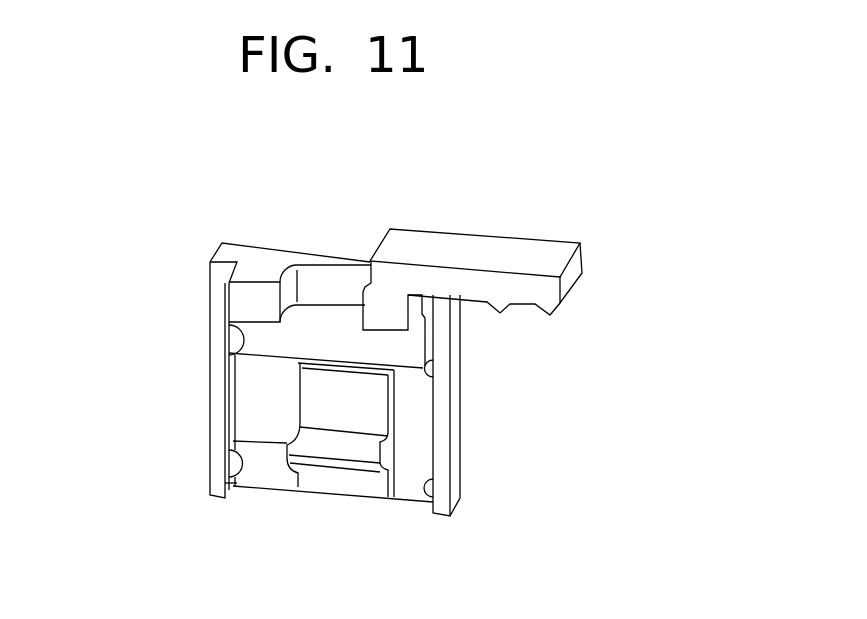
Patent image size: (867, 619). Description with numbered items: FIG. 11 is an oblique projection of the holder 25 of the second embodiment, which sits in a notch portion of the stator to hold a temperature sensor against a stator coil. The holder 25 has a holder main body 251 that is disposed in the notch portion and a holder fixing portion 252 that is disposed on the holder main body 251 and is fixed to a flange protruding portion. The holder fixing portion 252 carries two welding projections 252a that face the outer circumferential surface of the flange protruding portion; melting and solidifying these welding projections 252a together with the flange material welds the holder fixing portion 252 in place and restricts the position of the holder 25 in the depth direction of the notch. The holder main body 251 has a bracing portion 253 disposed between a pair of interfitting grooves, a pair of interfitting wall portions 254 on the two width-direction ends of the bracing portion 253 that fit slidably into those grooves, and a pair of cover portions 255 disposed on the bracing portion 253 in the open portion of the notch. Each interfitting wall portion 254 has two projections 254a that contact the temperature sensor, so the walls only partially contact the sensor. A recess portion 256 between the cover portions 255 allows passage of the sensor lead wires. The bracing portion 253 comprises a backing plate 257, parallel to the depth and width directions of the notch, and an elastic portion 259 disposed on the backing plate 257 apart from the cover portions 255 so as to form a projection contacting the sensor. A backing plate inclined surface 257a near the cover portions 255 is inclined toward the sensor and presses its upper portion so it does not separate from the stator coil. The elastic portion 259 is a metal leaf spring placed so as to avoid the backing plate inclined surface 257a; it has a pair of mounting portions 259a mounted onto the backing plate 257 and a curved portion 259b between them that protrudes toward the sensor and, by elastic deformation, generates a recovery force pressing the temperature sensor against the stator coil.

The holder 25 is at (221, 208).
The holder main body 251 is at (212, 279).
The holder fixing portion 252 is at (520, 250).
The welding projection 252a is at (497, 313).
The bracing portion 253 is at (267, 490).
The interfitting wall portion 254 is at (218, 402).
The projection 254a is at (238, 336).
The cover portion 255 is at (367, 317).
The recess portion 256 is at (335, 283).
The backing plate 257 is at (240, 455).
The backing plate inclined surface 257a is at (273, 340).
The elastic portion 259 is at (393, 416).
The mounting portion 259a is at (310, 388).
The curved portion 259b is at (258, 453).